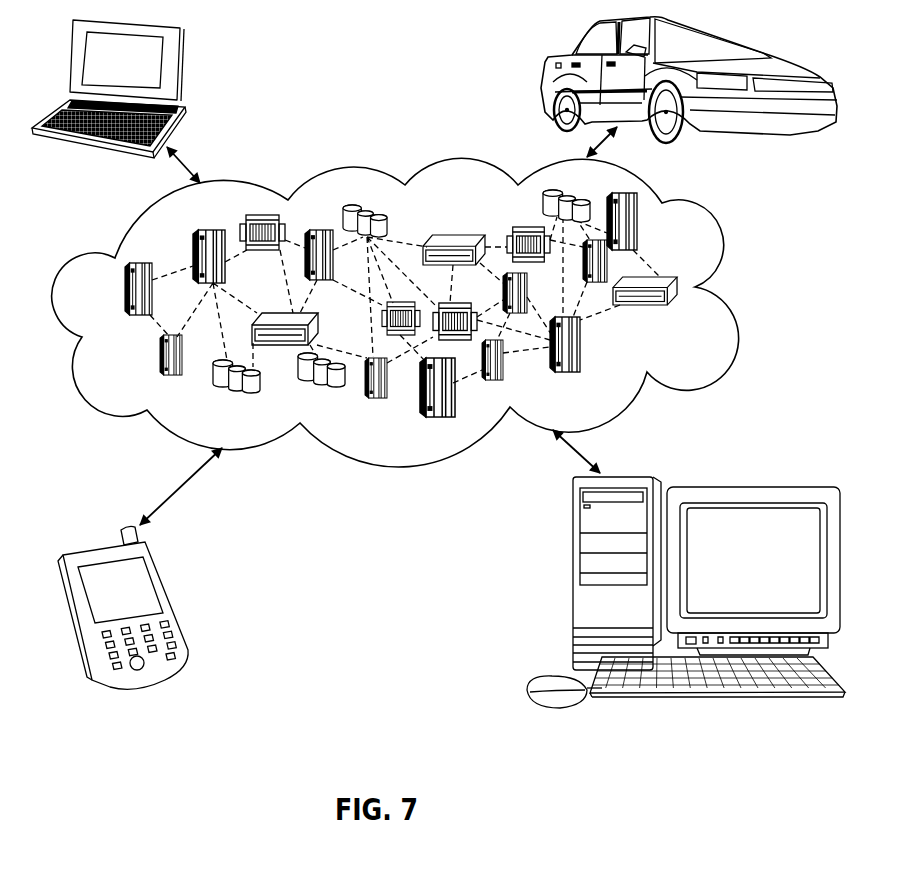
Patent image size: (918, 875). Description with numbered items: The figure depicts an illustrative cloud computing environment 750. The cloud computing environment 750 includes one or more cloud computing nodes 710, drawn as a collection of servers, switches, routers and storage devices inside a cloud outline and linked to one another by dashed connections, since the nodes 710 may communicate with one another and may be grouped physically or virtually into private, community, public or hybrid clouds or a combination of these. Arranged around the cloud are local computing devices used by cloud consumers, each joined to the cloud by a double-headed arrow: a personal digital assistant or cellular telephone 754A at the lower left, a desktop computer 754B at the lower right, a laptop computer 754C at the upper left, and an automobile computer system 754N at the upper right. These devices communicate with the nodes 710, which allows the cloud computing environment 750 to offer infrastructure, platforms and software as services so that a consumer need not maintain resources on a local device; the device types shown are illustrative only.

The laptop computer 754C is at (181, 64).
The automobile computer system 754N is at (548, 70).
The cloud computing environment 750 is at (722, 256).
The cloud computing nodes 710 is at (697, 310).
The personal digital assistant or cellular telephone 754A is at (170, 602).
The desktop computer 754B is at (573, 583).